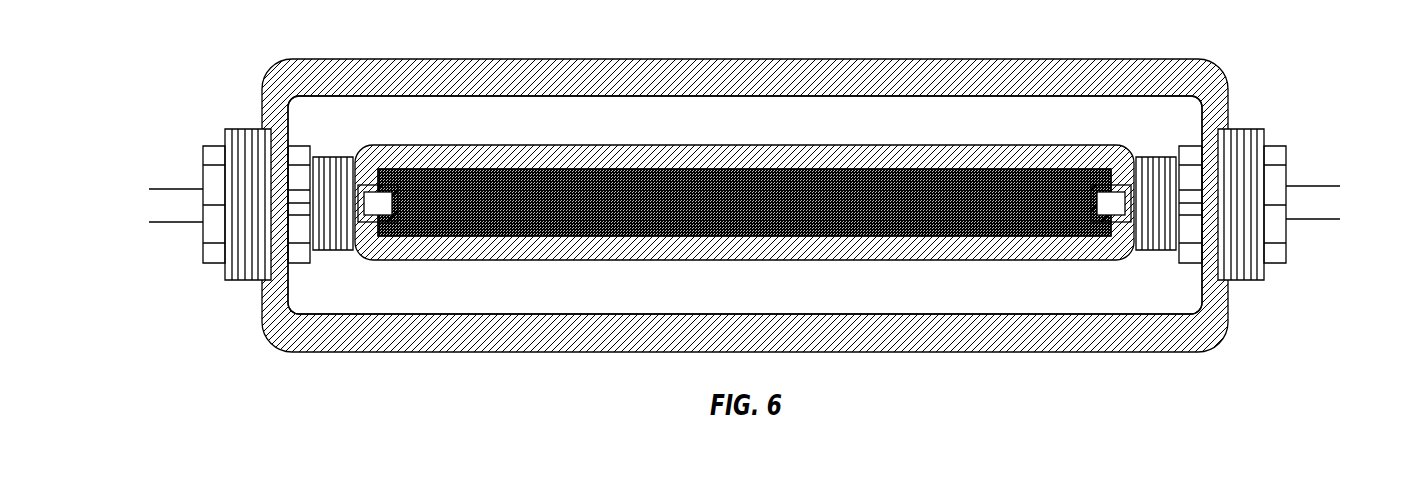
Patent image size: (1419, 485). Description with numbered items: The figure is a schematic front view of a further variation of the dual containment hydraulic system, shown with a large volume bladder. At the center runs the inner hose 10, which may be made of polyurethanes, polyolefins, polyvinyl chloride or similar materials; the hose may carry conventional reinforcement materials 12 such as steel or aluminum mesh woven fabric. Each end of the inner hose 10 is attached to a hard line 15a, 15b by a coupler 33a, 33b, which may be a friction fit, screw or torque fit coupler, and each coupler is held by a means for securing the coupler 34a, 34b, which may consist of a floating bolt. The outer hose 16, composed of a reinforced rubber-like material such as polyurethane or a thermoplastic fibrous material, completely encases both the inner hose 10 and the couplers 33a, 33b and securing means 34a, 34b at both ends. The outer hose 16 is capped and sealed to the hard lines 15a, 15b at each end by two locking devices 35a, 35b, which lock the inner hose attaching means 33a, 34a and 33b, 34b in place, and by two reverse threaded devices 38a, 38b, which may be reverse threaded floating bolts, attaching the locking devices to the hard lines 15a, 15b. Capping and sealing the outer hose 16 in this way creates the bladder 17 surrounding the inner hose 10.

The inner hose 10 is at (925, 157).
The reinforcement materials 12 is at (905, 210).
The hard line 15a is at (193, 212).
The hard line 15b is at (1297, 210).
The outer hose 16 is at (405, 72).
The bladder 17 is at (645, 108).
The coupler 33a is at (330, 158).
The coupler 33b is at (1162, 155).
The means for securing the coupler 34a is at (300, 235).
The means for securing the coupler 34b is at (1192, 232).
The locking device 35a is at (253, 130).
The locking device 35b is at (1230, 137).
The reverse threaded device 38a is at (215, 162).
The reverse threaded device 38b is at (1275, 157).